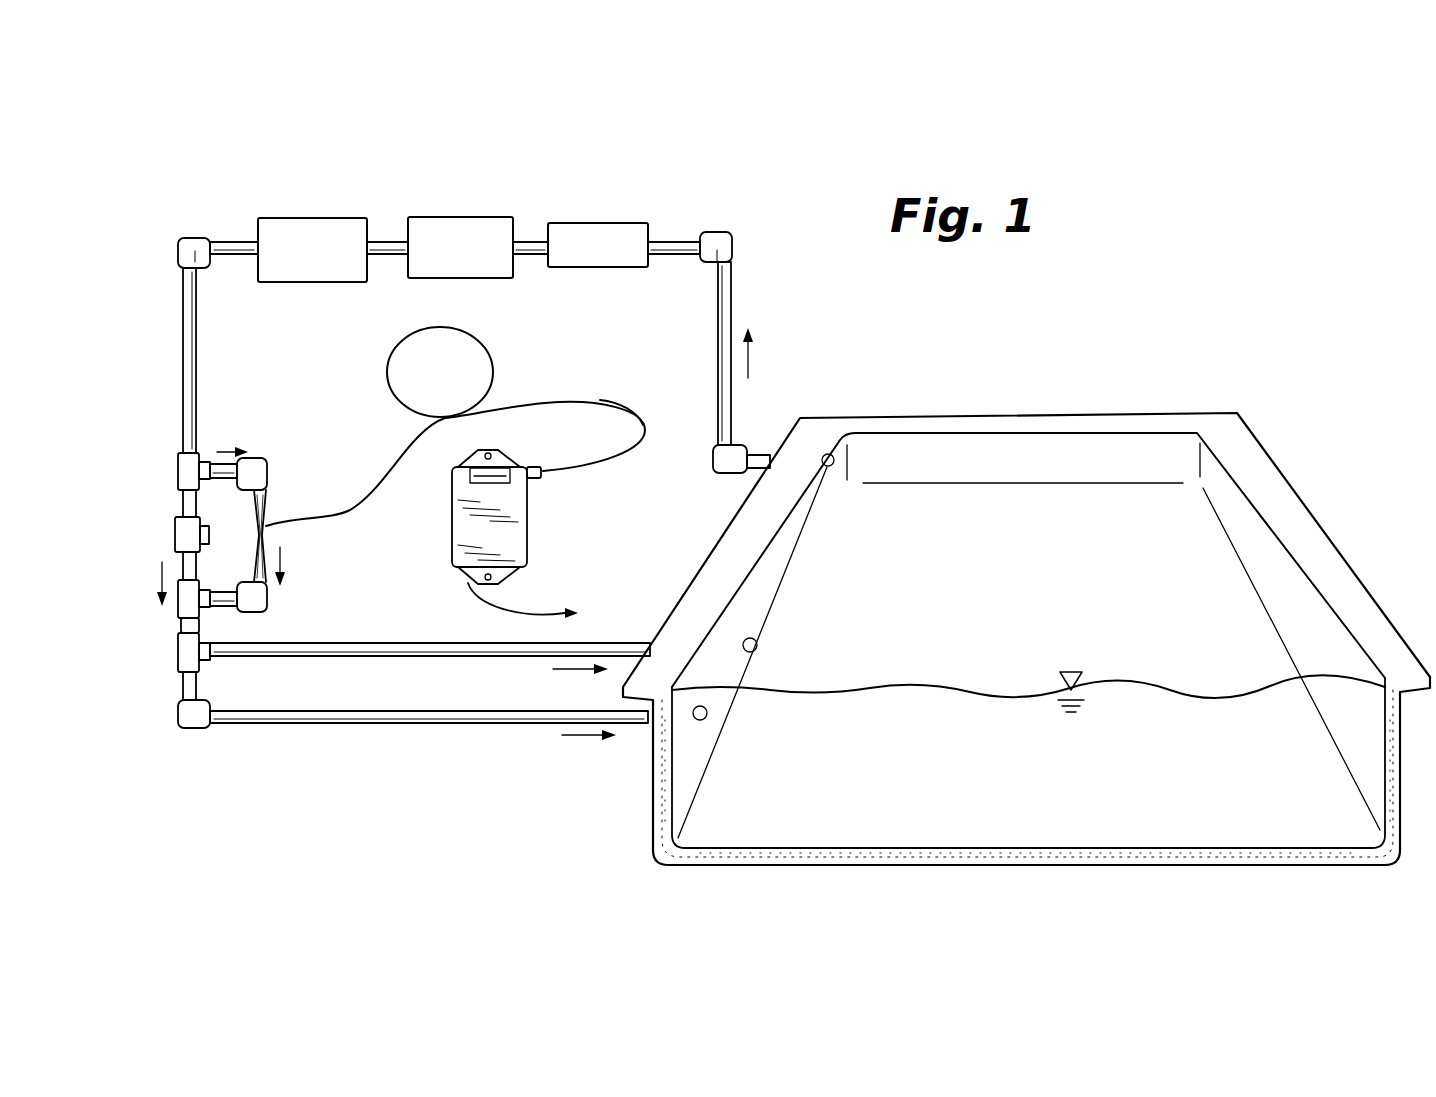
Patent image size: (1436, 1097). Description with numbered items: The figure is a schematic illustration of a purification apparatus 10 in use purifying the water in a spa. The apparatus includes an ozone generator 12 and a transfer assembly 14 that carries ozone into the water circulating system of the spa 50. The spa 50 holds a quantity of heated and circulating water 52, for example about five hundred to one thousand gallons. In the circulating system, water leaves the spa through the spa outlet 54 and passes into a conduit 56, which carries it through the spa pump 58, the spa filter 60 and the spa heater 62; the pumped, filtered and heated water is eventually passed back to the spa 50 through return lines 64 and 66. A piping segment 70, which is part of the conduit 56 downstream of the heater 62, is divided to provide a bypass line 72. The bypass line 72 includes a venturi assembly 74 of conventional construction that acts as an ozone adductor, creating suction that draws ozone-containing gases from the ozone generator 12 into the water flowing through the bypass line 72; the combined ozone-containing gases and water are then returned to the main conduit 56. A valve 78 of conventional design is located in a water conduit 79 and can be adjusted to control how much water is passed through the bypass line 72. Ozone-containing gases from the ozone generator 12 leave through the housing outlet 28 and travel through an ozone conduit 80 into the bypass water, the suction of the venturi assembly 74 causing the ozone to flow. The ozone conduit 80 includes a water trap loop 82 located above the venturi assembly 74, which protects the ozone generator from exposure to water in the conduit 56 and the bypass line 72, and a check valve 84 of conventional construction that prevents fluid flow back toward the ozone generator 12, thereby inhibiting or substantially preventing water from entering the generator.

The purification apparatus 10 is at (502, 178).
The ozone generator 12 is at (432, 570).
The transfer assembly 14 is at (414, 760).
The housing outlet 28 is at (537, 479).
The spa 50 is at (1212, 415).
The water 52 is at (1191, 688).
The spa outlet 54 is at (831, 466).
The conduit 56 is at (731, 308).
The spa pump 58 is at (613, 223).
The spa filter 60 is at (430, 217).
The spa heater 62 is at (290, 218).
The return line 64 is at (245, 661).
The return line 66 is at (408, 724).
The piping segment 70 is at (181, 400).
The bypass line 72 is at (284, 495).
The venturi assembly 74 is at (262, 529).
The valve 78 is at (209, 528).
The water conduit 79 is at (175, 535).
The ozone conduit 80 is at (616, 450).
The water trap loop 82 is at (492, 344).
The check valve 84 is at (612, 434).